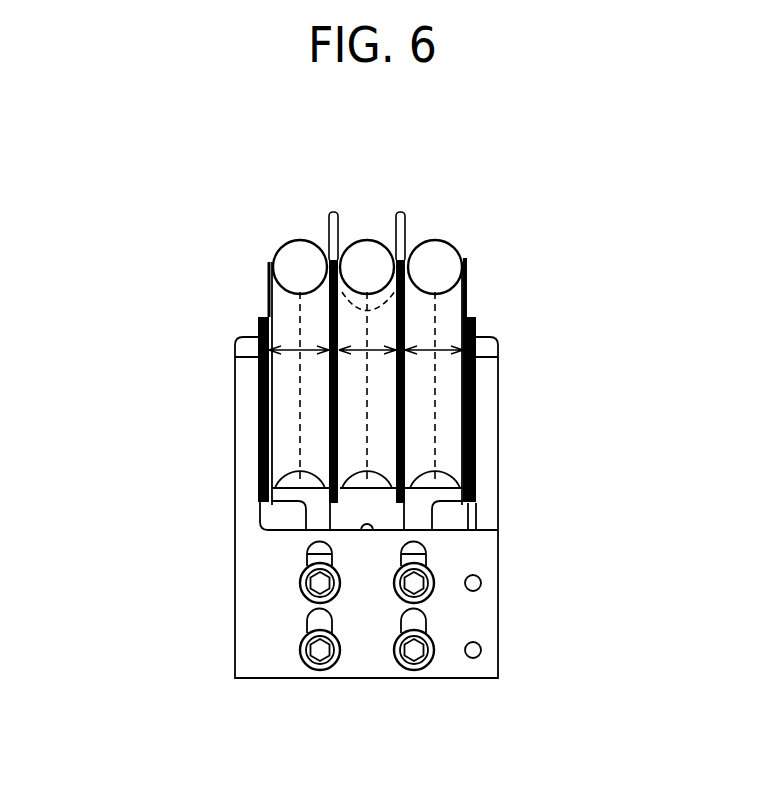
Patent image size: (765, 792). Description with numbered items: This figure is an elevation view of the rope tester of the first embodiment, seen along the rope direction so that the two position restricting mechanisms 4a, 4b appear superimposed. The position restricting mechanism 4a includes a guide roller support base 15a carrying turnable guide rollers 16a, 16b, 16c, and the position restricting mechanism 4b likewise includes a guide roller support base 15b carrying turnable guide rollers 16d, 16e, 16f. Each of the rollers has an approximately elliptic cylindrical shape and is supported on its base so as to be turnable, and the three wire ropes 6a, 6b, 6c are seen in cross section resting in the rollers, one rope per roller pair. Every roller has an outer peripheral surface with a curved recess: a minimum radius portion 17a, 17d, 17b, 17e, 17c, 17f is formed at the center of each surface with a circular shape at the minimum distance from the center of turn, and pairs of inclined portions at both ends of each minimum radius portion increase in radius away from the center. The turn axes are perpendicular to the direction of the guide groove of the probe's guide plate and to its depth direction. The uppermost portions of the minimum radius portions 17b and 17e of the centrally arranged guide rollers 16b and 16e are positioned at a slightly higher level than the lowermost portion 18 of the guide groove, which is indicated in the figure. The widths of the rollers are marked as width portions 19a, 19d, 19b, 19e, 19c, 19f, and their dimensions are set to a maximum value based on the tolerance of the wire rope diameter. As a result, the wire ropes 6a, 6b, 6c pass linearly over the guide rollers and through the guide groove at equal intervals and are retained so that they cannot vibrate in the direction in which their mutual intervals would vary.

The position restricting mechanism 4a is at (344, 649).
The position restricting mechanism 4b is at (275, 648).
The guide roller support base 15a is at (271, 476).
The guide roller support base 15b is at (250, 549).
The wire rope 6a is at (300, 250).
The wire rope 6b is at (368, 250).
The wire rope 6c is at (434, 250).
The turnable guide roller 16a is at (150, 371).
The turnable guide roller 16d is at (273, 292).
The turnable guide roller 16b is at (250, 325).
The turnable guide roller 16e is at (337, 262).
The turnable guide roller 16c is at (557, 370).
The turnable guide roller 16f is at (465, 284).
The minimum radius portion 17a is at (177, 386).
The minimum radius portion 17d is at (298, 325).
The minimum radius portion 17b is at (538, 419).
The minimum radius portion 17e is at (370, 446).
The minimum radius portion 17c is at (571, 392).
The minimum radius portion 17f is at (433, 412).
The lowermost portion of the guide groove 18 is at (368, 309).
The width portion 19a is at (189, 417).
The width portion 19d is at (298, 350).
The width portion 19b is at (229, 454).
The width portion 19e is at (364, 350).
The width portion 19c is at (538, 386).
The width portion 19f is at (436, 350).